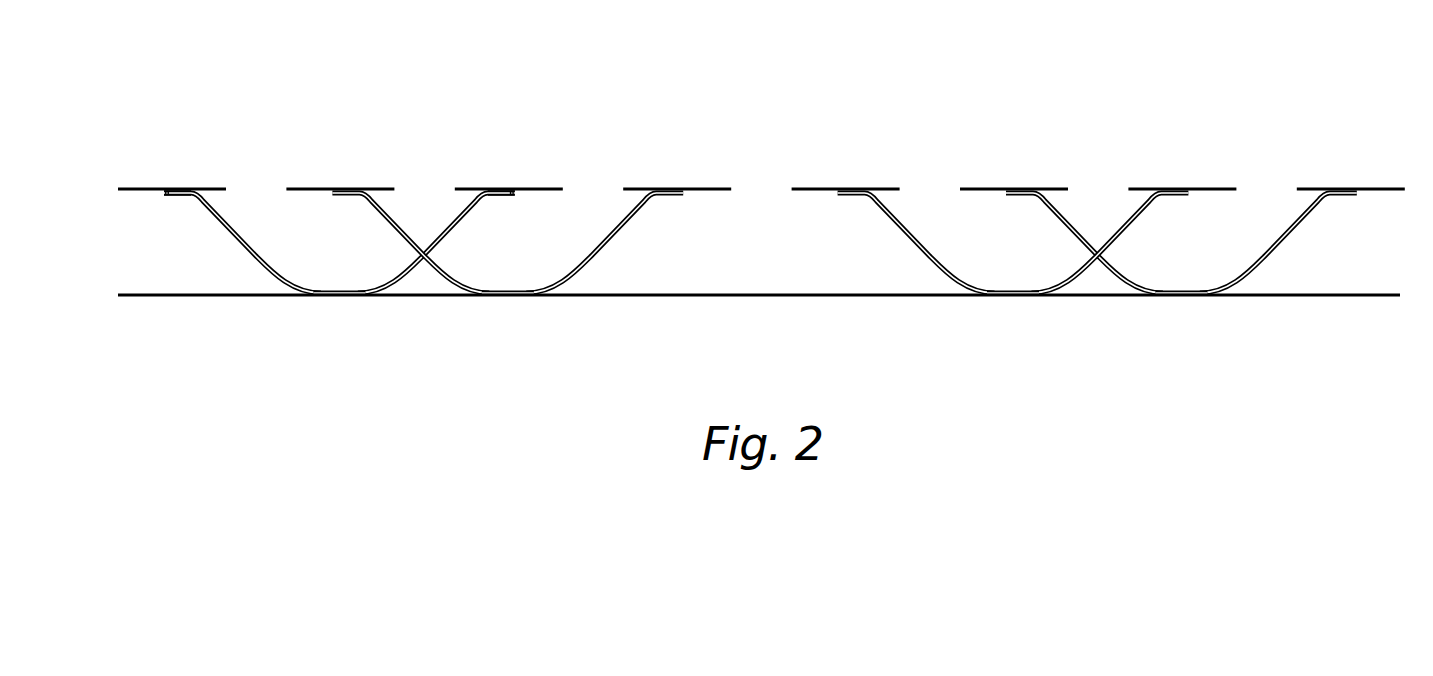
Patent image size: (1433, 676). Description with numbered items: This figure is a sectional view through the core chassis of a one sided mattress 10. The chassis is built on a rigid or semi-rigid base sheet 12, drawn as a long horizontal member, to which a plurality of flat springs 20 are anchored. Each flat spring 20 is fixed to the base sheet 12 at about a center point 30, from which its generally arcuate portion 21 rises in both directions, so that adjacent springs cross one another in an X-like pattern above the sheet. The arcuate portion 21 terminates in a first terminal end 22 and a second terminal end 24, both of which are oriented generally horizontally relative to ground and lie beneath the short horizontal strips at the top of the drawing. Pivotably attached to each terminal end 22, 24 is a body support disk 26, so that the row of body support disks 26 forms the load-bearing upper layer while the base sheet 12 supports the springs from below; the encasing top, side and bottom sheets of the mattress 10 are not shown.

The mattress 10 is at (1158, 76).
The base sheet 12 is at (752, 296).
The flat spring 20 is at (226, 243).
The arcuate portion 21 is at (452, 277).
The first terminal end 22 is at (501, 196).
The second terminal end 24 is at (185, 194).
The body support disk 26 is at (192, 188).
The center point 30 is at (336, 292).